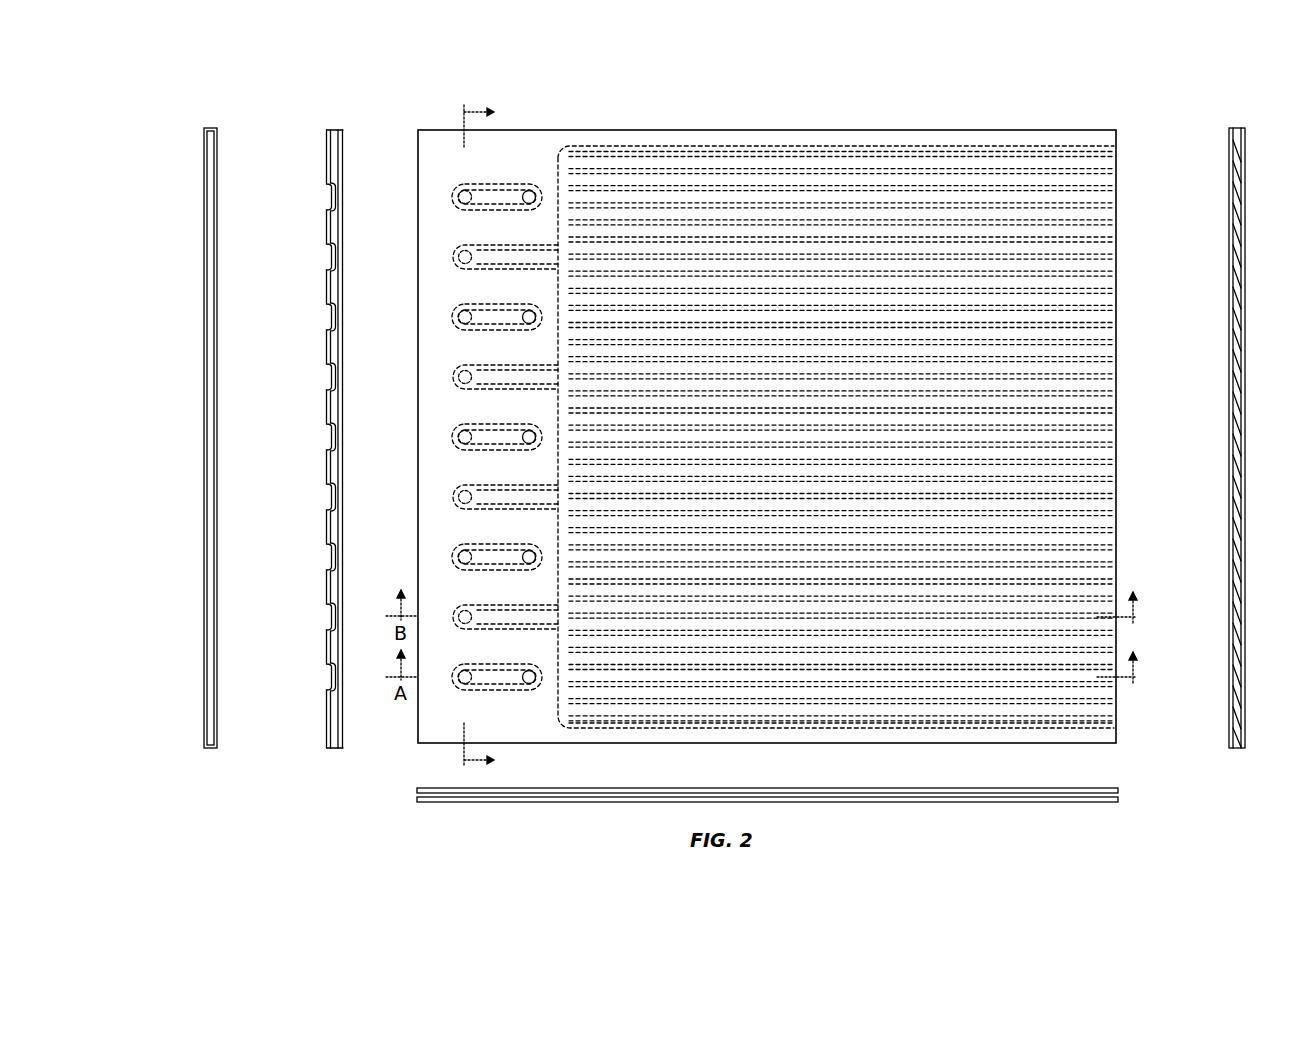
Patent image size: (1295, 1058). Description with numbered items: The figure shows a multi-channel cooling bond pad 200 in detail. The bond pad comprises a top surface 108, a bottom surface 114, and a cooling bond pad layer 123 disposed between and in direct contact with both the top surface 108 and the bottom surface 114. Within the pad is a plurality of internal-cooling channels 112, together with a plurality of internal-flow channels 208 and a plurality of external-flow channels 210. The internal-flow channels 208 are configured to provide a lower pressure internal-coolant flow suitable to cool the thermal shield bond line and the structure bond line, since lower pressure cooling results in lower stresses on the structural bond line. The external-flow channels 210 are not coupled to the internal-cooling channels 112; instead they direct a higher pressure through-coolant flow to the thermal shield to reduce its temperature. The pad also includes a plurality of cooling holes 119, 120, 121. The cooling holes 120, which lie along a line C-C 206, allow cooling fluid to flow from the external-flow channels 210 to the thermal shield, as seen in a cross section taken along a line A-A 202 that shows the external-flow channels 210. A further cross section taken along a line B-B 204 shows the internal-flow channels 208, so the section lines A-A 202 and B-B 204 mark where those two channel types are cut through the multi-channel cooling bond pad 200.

The multi-channel cooling bond pad 200 is at (1197, 97).
The top surface 108 is at (352, 254).
The internal-cooling channels 112 is at (935, 150).
The bottom surface 114 is at (1245, 333).
The cooling holes 119 is at (458, 255).
The cooling holes 120 is at (456, 193).
The cooling holes 121 is at (534, 191).
The cooling bond pad layer 123 is at (212, 130).
The line A-A 202 is at (1145, 664).
The line B-B 204 is at (1145, 605).
The line C-C 206 is at (340, 128).
The internal-flow channels 208 is at (500, 252).
The external-flow channels 210 is at (503, 190).